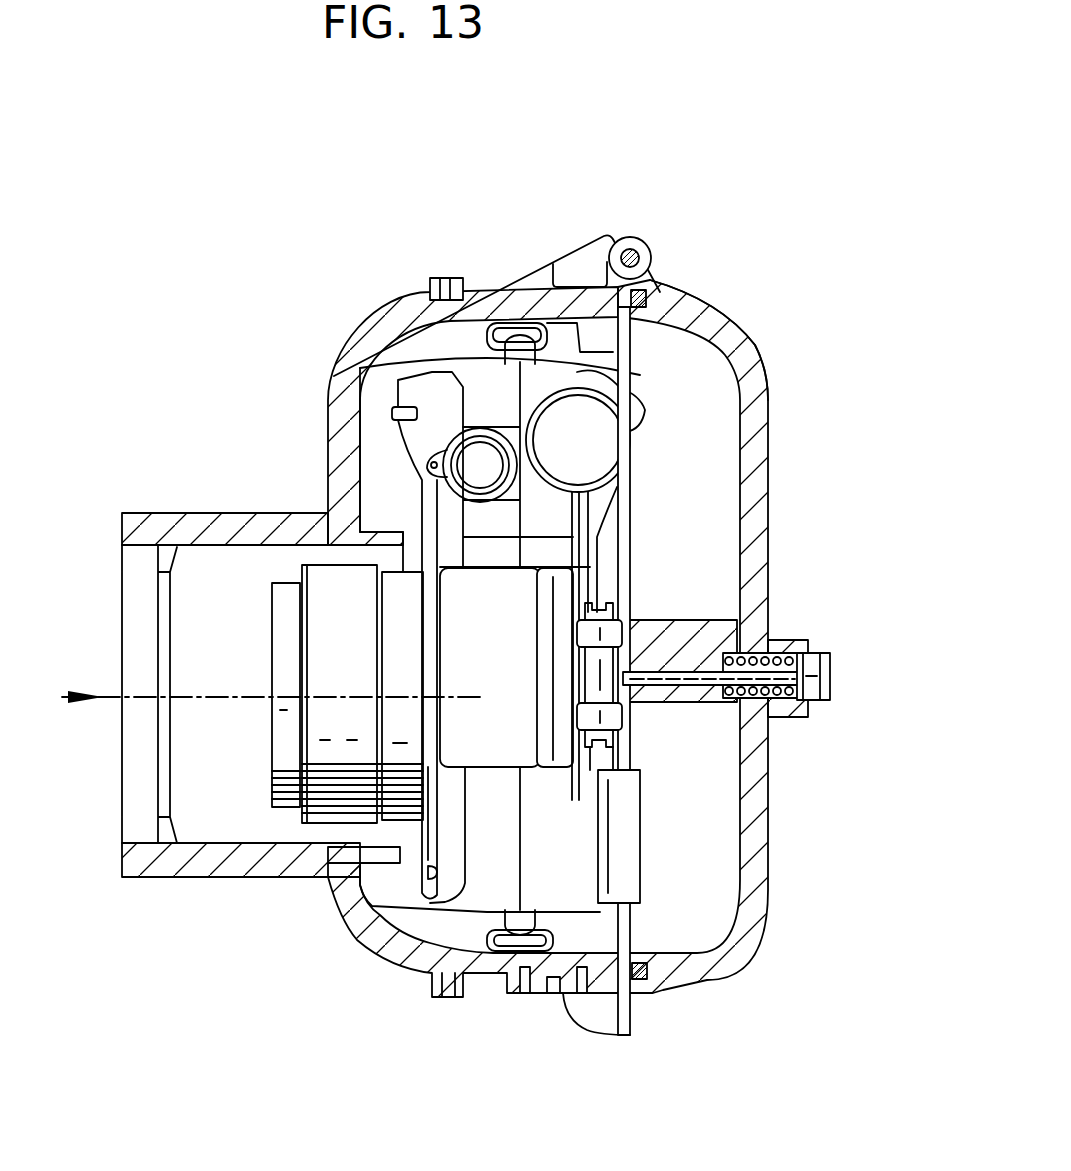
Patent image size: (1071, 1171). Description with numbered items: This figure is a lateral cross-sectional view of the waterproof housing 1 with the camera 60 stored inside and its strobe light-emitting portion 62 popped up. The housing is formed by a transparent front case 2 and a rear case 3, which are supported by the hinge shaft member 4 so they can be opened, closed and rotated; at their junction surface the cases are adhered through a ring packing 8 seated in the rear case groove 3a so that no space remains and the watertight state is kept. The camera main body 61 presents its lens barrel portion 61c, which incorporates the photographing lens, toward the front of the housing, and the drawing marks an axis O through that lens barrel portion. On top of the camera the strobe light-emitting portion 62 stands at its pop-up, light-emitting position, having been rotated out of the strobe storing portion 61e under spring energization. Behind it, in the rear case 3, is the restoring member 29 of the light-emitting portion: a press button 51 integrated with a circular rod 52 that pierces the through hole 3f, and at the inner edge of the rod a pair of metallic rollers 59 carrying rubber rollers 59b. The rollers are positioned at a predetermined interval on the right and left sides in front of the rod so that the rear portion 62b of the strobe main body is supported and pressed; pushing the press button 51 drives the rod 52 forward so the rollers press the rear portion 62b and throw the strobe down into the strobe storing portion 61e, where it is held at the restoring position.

The waterproof housing 1 is at (265, 265).
The front case 2 is at (558, 287).
The rear case 3 is at (750, 325).
The rear case groove 3a is at (655, 292).
The through hole 3f is at (670, 640).
The hinge shaft member 4 is at (643, 237).
The ring packing 8 is at (647, 293).
The restoring member of the light-emitting portion 29 is at (855, 663).
The press button 51 is at (823, 700).
The rod 52 is at (667, 670).
The metallic rollers 59 is at (630, 612).
The rubber rollers 59b is at (623, 638).
The camera 60 is at (396, 510).
The lever 61 is at (443, 847).
The lens barrel portion 61c is at (330, 817).
The strobe storing portion 61e is at (437, 612).
The strobe light-emitting portion 62 is at (543, 712).
The rear portion of the strobe main body 62b is at (580, 603).
The optical axis O is at (100, 693).